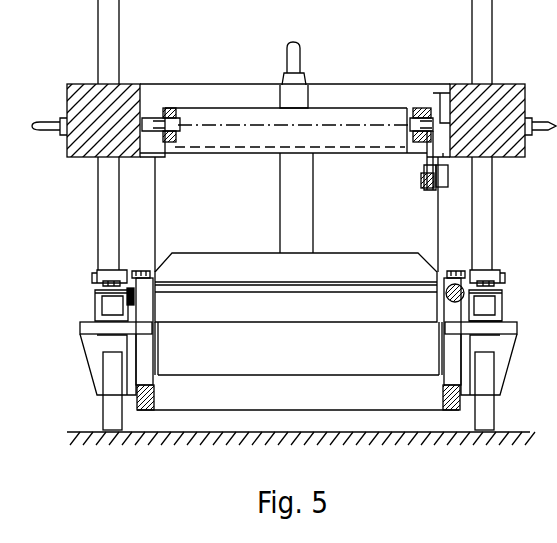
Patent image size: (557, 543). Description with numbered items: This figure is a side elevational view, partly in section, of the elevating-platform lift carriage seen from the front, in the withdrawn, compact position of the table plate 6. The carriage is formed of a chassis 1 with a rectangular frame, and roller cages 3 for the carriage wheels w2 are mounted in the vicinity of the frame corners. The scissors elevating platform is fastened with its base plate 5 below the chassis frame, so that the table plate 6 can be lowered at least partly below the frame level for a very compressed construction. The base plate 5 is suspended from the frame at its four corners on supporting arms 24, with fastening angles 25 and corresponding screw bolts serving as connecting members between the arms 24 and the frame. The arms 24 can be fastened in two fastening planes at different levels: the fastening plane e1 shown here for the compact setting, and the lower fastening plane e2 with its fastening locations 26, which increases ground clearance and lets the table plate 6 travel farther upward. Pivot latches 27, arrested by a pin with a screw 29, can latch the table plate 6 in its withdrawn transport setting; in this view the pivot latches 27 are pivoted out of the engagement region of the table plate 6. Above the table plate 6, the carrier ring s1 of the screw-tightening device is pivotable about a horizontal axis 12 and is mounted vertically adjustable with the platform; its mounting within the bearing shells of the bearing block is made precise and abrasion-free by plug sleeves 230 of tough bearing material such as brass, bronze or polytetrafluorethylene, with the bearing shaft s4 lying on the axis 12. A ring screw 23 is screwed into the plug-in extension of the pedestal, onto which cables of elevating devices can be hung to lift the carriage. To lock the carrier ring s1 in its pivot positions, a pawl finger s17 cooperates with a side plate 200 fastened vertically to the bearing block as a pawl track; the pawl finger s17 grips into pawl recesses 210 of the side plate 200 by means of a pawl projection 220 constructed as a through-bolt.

The carrier ring s1 is at (513, 84).
The bearing shaft s4 is at (153, 118).
The plug sleeves 230 is at (185, 115).
The horizontal axis 12 is at (257, 125).
The ring screw 23 is at (296, 47).
The side plate 200 is at (422, 176).
The pawl recesses 210 is at (427, 184).
The pawl finger s17 is at (447, 170).
The pawl projection 220 is at (450, 182).
The table plate 6 is at (256, 322).
The supporting arms 24 is at (147, 346).
The base plate 5 is at (220, 404).
The fastening plane e2 is at (152, 396).
The fastening plane e1 is at (140, 295).
The fastening angles 25 is at (115, 278).
The pivot latches 27 is at (128, 272).
The chassis 1 is at (500, 299).
The screw 29 is at (87, 323).
The roller cages 3 is at (90, 357).
The carriage wheels w2 is at (108, 413).
The fastening locations 26 is at (136, 398).